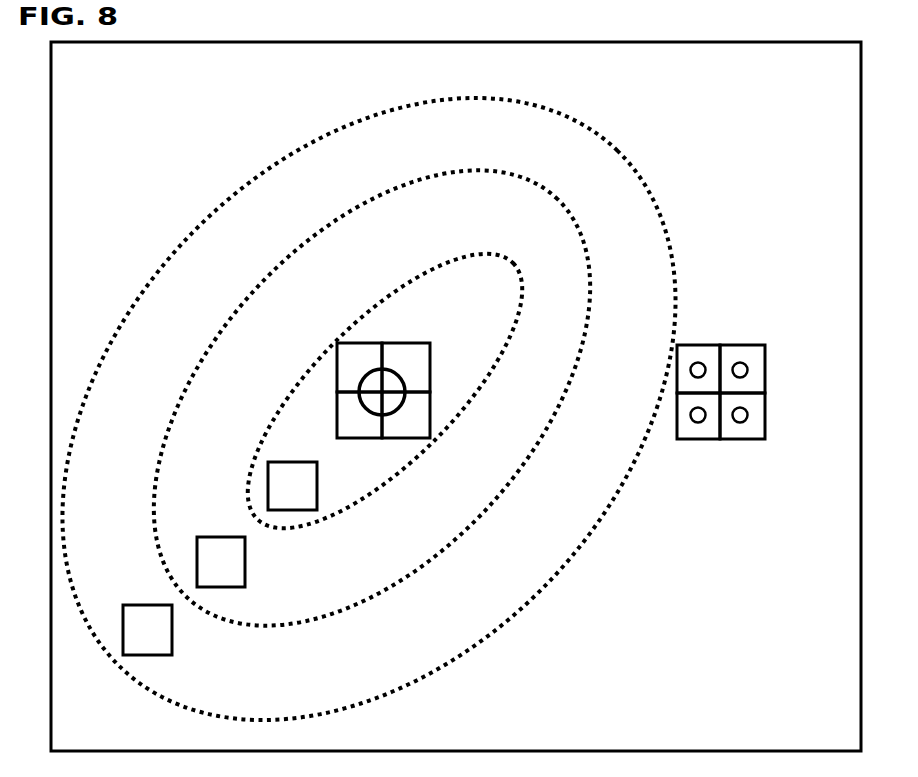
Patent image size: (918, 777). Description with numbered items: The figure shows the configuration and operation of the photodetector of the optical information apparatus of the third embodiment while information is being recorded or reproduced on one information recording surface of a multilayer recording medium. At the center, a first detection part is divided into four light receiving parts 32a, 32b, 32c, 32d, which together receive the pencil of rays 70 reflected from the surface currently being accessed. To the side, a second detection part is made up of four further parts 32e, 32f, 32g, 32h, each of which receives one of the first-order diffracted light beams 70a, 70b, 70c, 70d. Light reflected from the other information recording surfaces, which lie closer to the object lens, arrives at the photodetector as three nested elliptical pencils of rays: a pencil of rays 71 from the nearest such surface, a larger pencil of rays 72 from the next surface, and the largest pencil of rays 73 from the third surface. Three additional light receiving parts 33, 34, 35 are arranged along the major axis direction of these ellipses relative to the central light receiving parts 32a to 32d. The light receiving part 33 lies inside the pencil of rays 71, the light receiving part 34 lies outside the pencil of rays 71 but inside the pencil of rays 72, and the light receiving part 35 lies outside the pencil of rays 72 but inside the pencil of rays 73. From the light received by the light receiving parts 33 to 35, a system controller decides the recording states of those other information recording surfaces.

The light receiving part 32a is at (353, 363).
The light receiving part 32b is at (345, 417).
The light receiving part 32c is at (397, 432).
The light receiving part 32d is at (398, 352).
The second detection part 32e is at (682, 355).
The second detection part 32f is at (685, 442).
The second detection part 32g is at (752, 417).
The second detection part 32h is at (727, 352).
The light receiving part 33 is at (317, 510).
The light receiving part 34 is at (245, 587).
The light receiving part 35 is at (172, 655).
The pencil of rays 70 is at (398, 375).
The first-order diffracted light beam 70a is at (705, 360).
The first-order diffracted light beam 70b is at (703, 420).
The first-order diffracted light beam 70c is at (747, 360).
The first-order diffracted light beam 70d is at (748, 420).
The pencil of rays 71 is at (463, 416).
The pencil of rays 72 is at (465, 533).
The pencil of rays 73 is at (467, 655).